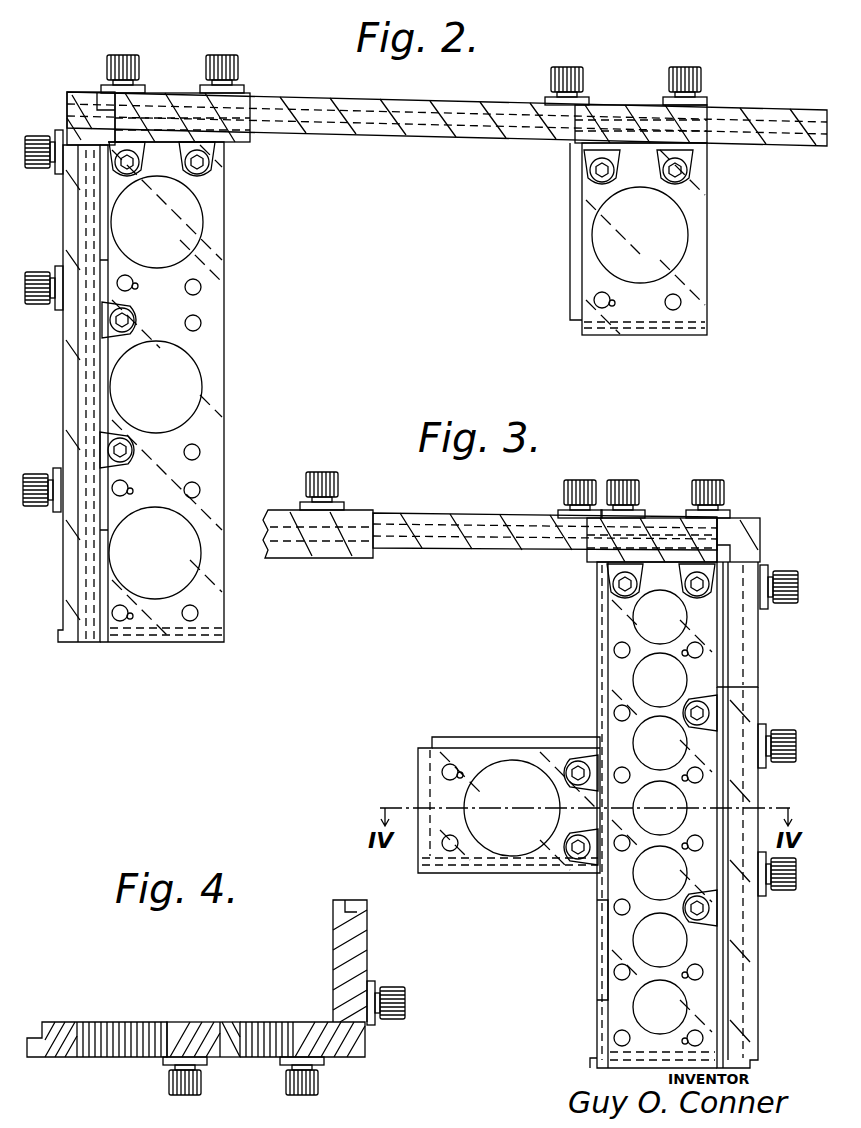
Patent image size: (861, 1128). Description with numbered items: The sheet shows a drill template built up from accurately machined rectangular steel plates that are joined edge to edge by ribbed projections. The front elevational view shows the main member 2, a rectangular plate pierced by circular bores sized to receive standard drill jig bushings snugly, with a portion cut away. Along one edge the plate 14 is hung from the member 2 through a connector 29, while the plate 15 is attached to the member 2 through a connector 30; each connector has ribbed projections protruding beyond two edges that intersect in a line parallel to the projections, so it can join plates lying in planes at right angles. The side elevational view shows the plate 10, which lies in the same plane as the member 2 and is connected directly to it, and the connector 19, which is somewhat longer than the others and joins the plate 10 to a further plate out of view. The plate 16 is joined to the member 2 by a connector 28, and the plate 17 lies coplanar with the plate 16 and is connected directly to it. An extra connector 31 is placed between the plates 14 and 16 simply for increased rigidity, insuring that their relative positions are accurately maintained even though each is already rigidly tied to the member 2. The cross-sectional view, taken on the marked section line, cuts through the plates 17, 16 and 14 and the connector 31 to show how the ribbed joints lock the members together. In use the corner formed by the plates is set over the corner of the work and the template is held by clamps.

In FIG. 2, the member 2 is at (311, 106).
In FIG. 3, the member 2 is at (732, 543).
In FIG. 3, the rectangular plate 10 is at (447, 527).
In FIG. 2, the rectangular plate 14 is at (213, 278).
In FIG. 3, the rectangular plate 14 is at (752, 657).
In FIG. 4, the rectangular plate 14 is at (368, 917).
In FIG. 2, the rectangular plate 15 is at (697, 248).
In FIG. 2, the rectangular plate 16 is at (72, 240).
In FIG. 3, the rectangular plate 16 is at (615, 952).
In FIG. 4, the rectangular plate 16 is at (225, 1025).
In FIG. 3, the rectangular plate 17 is at (473, 756).
In FIG. 4, the rectangular plate 17 is at (50, 1025).
In FIG. 3, the connector 19 is at (352, 549).
In FIG. 2, the connector 28 is at (82, 108).
In FIG. 3, the connector 28 is at (655, 525).
In FIG. 2, the connector 29 is at (153, 100).
In FIG. 3, the connector 29 is at (748, 540).
In FIG. 2, the connector 30 is at (608, 112).
In FIG. 2, the extra connector 31 is at (72, 400).
In FIG. 3, the extra connector 31 is at (748, 790).
In FIG. 4, the extra connector 31 is at (365, 1048).